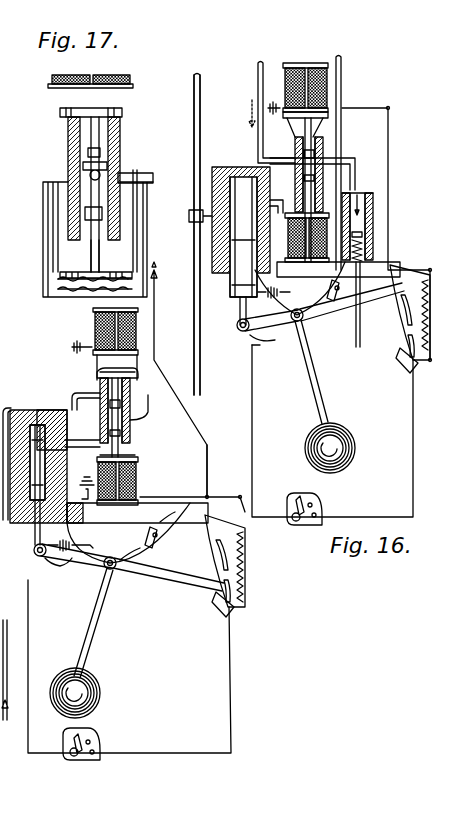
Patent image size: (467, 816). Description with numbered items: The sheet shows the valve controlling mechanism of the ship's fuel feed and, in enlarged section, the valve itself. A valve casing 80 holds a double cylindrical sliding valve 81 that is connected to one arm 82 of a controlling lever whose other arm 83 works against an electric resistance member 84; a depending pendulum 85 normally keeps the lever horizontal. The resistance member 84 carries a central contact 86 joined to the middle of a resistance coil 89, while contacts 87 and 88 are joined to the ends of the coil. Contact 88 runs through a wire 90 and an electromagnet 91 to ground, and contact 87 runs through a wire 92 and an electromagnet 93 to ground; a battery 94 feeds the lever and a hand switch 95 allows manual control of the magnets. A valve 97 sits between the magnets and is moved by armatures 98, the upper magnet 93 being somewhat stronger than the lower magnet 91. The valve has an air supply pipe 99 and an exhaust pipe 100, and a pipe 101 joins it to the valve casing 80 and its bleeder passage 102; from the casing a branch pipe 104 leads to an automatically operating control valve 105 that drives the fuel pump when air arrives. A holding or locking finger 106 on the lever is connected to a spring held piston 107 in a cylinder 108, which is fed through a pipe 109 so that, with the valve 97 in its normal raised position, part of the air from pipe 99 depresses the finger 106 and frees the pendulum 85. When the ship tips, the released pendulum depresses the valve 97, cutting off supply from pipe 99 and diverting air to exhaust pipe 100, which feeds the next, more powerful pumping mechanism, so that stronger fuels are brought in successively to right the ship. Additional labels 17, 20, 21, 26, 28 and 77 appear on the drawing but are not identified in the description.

In FIG. 17, the arrow indicator 17 is at (146, 466).
In FIG. 17, the frame 20 is at (248, 593).
In FIG. 16, the frame 20 is at (414, 405).
In FIG. 17, the coil 21 is at (139, 484).
In FIG. 17, the bracket 26 is at (100, 740).
In FIG. 16, the bracket 26 is at (323, 502).
In FIG. 17, the cap 28 is at (136, 455).
In FIG. 16, the cap 28 is at (329, 116).
In FIG. 17, the valve housing 77 is at (117, 367).
In FIG. 17, the valve casing 80 is at (148, 233).
In FIG. 16, the valve casing 80 is at (228, 168).
In FIG. 17, the double cylindrical sliding valve 81 is at (38, 485).
In FIG. 16, the double cylindrical sliding valve 81 is at (243, 251).
In FIG. 17, the arm of controlling lever 82 is at (45, 560).
In FIG. 16, the arm of controlling lever 82 is at (250, 334).
In FIG. 17, the arm of controlling lever 83 is at (163, 584).
In FIG. 16, the arm of controlling lever 83 is at (345, 312).
In FIG. 17, the electric resistance member 84 is at (220, 610).
In FIG. 16, the electric resistance member 84 is at (408, 365).
In FIG. 17, the pendulum 85 is at (92, 655).
In FIG. 16, the pendulum 85 is at (312, 375).
In FIG. 17, the central contact 86 is at (220, 558).
In FIG. 16, the central contact 86 is at (405, 312).
In FIG. 17, the contact 87 is at (210, 545).
In FIG. 16, the contact 87 is at (400, 287).
In FIG. 17, the contact 88 is at (226, 598).
In FIG. 16, the contact 88 is at (408, 352).
In FIG. 17, the resistance coil 89 is at (248, 550).
In FIG. 16, the resistance coil 89 is at (431, 305).
In FIG. 17, the wire 90 is at (248, 593).
In FIG. 16, the wire 90 is at (417, 338).
In FIG. 17, the electromagnet 91 is at (72, 290).
In FIG. 17, the wire 92 is at (208, 468).
In FIG. 17, the electromagnet 93 is at (50, 79).
In FIG. 16, the electromagnet 93 is at (308, 63).
In FIG. 17, the battery 94 is at (68, 544).
In FIG. 16, the battery 94 is at (282, 292).
In FIG. 17, the hand switch 95 is at (147, 536).
In FIG. 16, the hand switch 95 is at (342, 290).
In FIG. 17, the valve 97 is at (131, 430).
In FIG. 16, the valve 97 is at (325, 152).
In FIG. 17, the armature 98 is at (123, 112).
In FIG. 17, the air supply pipe 99 is at (138, 173).
In FIG. 16, the air supply pipe 99 is at (259, 147).
In FIG. 17, the exhaust pipe 100 is at (156, 300).
In FIG. 16, the exhaust pipe 100 is at (342, 77).
In FIG. 17, the pipe 101 is at (100, 252).
In FIG. 16, the pipe 101 is at (283, 208).
In FIG. 17, the bleeder passage 102 is at (67, 470).
In FIG. 17, the branch pipe 104 is at (0, 306).
In FIG. 16, the branch pipe 104 is at (194, 142).
In FIG. 17, the control valve 105 is at (24, 153).
In FIG. 16, the holding or locking finger 106 is at (355, 330).
In FIG. 16, the spring held piston 107 is at (374, 242).
In FIG. 16, the cylinder 108 is at (374, 202).
In FIG. 16, the pipe 109 is at (360, 165).